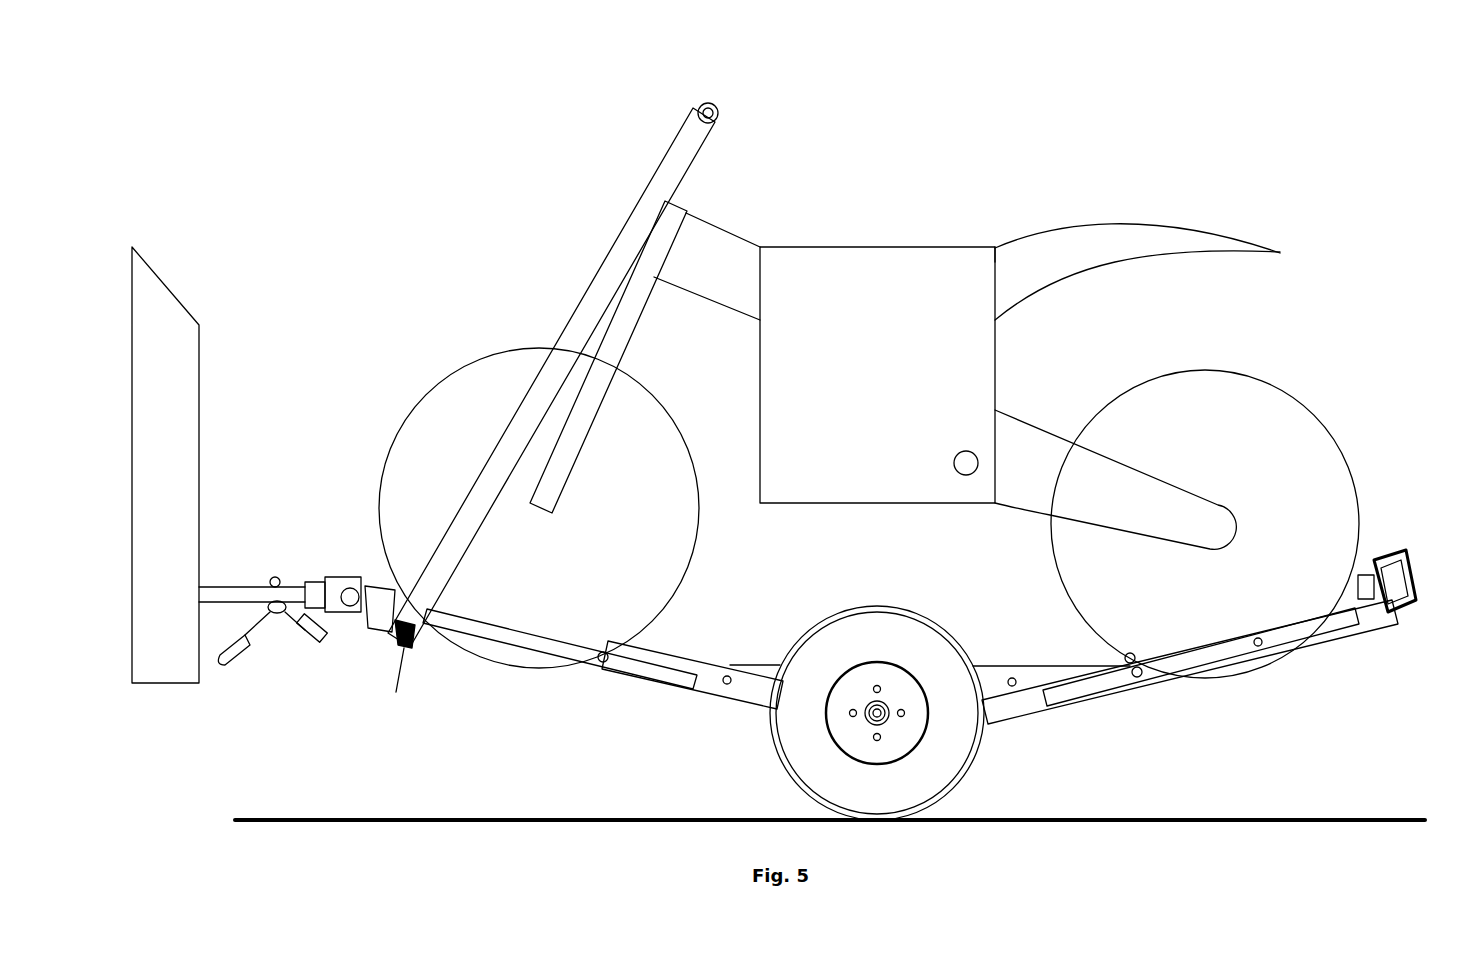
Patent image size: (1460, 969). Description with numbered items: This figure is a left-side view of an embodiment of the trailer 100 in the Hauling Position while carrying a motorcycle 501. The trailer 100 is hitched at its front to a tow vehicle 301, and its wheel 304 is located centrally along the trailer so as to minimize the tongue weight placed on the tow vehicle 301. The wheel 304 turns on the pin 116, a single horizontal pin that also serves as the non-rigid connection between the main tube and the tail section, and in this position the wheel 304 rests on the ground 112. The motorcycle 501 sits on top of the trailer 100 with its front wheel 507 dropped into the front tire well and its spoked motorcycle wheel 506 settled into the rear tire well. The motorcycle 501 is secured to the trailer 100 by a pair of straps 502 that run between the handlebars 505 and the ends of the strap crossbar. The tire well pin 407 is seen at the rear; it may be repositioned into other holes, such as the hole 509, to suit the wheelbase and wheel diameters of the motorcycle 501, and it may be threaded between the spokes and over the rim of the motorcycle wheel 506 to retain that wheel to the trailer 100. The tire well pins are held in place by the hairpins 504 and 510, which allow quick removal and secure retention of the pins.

The trailer 100 is at (967, 427).
The ground 112 is at (830, 784).
The pin 116 is at (865, 720).
The tow vehicle 301 is at (210, 460).
The wheel 304 is at (940, 760).
The tire well pin 407 is at (1140, 676).
The motorcycle 501 is at (862, 246).
The straps 502 is at (600, 300).
The hairpin 504 is at (1190, 682).
The handlebars 505 is at (700, 103).
The motorcycle wheel 506 is at (1245, 425).
The front wheel 507 is at (455, 410).
The hole 509 is at (1265, 642).
The hairpin 510 is at (603, 669).